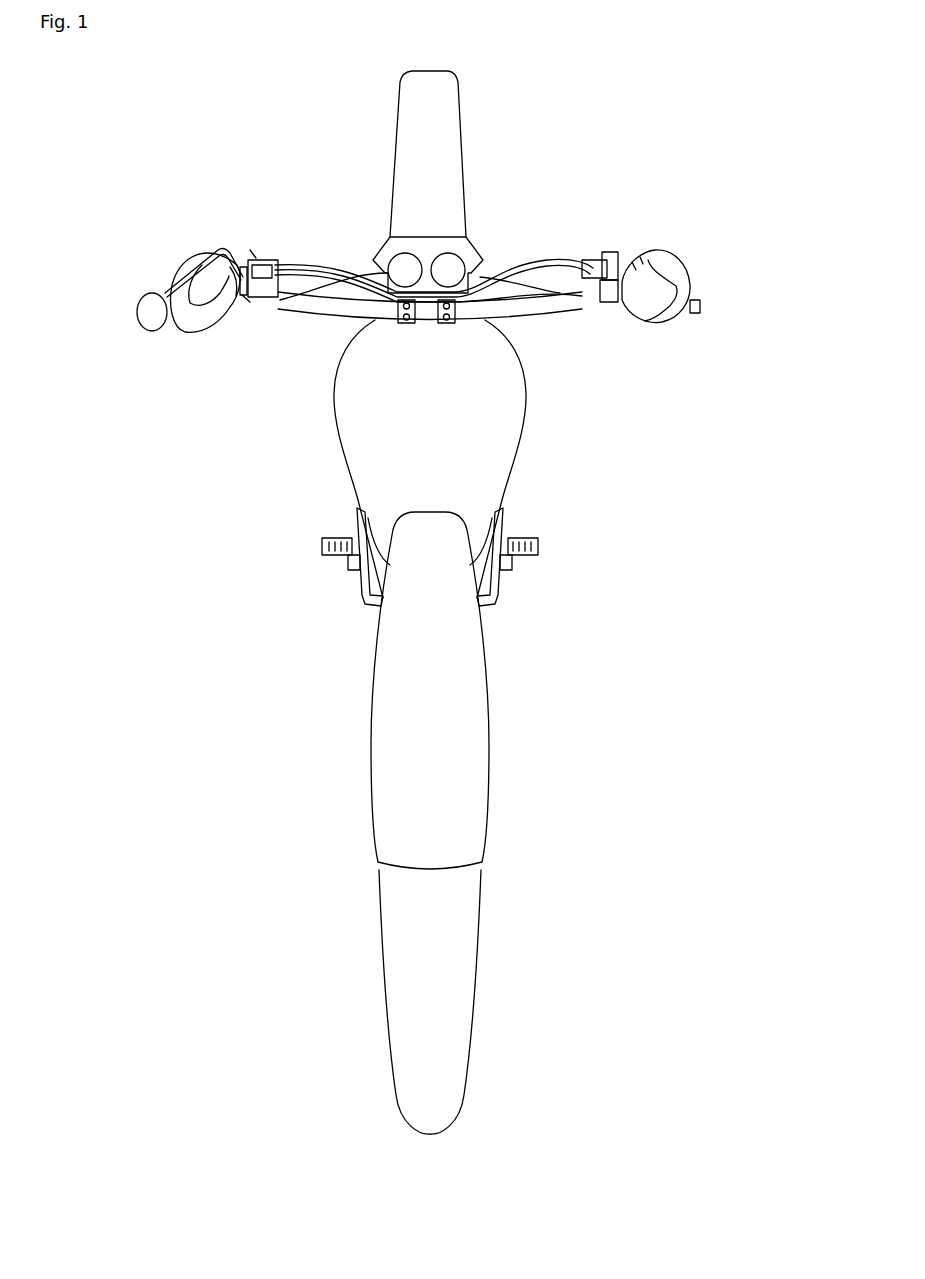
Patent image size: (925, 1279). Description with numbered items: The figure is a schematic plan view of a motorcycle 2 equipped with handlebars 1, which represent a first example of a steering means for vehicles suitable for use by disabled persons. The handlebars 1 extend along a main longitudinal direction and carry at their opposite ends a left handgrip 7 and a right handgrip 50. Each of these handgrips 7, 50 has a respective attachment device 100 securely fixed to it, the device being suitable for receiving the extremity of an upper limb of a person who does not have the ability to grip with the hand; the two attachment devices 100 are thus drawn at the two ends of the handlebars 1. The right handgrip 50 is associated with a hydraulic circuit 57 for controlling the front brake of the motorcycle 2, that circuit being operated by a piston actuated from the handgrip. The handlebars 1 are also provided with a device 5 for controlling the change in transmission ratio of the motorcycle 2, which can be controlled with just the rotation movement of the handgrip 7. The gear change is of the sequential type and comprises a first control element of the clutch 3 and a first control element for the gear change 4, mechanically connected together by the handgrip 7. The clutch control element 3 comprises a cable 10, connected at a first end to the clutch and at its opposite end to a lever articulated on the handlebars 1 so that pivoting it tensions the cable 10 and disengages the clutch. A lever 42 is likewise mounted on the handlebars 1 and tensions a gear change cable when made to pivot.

The handlebars 1 is at (500, 298).
The motorcycle 2 is at (228, 535).
The first control element of the clutch 3 is at (238, 262).
The first control element for the gear change 4 is at (272, 260).
The device for controlling the change in transmission ratio 5 is at (252, 258).
The left handgrip 7 is at (248, 306).
The cable 10 is at (313, 263).
The lever 42 is at (142, 300).
The right handgrip 50 is at (615, 300).
The hydraulic circuit 57 is at (588, 260).
The attachment device 100 is at (190, 332).